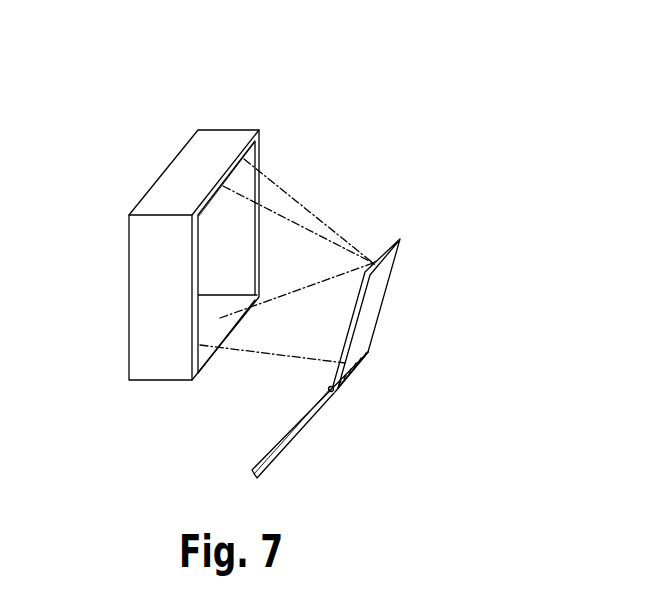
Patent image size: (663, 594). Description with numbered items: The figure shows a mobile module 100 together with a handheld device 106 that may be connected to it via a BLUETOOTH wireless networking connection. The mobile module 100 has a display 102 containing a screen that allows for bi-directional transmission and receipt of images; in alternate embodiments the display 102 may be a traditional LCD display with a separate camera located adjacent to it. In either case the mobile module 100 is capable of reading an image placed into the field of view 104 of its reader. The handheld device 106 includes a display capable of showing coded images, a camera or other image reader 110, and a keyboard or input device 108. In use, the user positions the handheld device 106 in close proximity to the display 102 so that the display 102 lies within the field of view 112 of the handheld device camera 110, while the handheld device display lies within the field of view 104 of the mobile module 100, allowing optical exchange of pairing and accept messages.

The mobile module 100 is at (150, 235).
The display 102 is at (228, 236).
The field of view 104 is at (283, 200).
The handheld device 106 is at (375, 292).
The keyboard or input device 108 is at (290, 420).
The camera or other image reader 110 is at (373, 264).
The field of view 112 is at (340, 242).